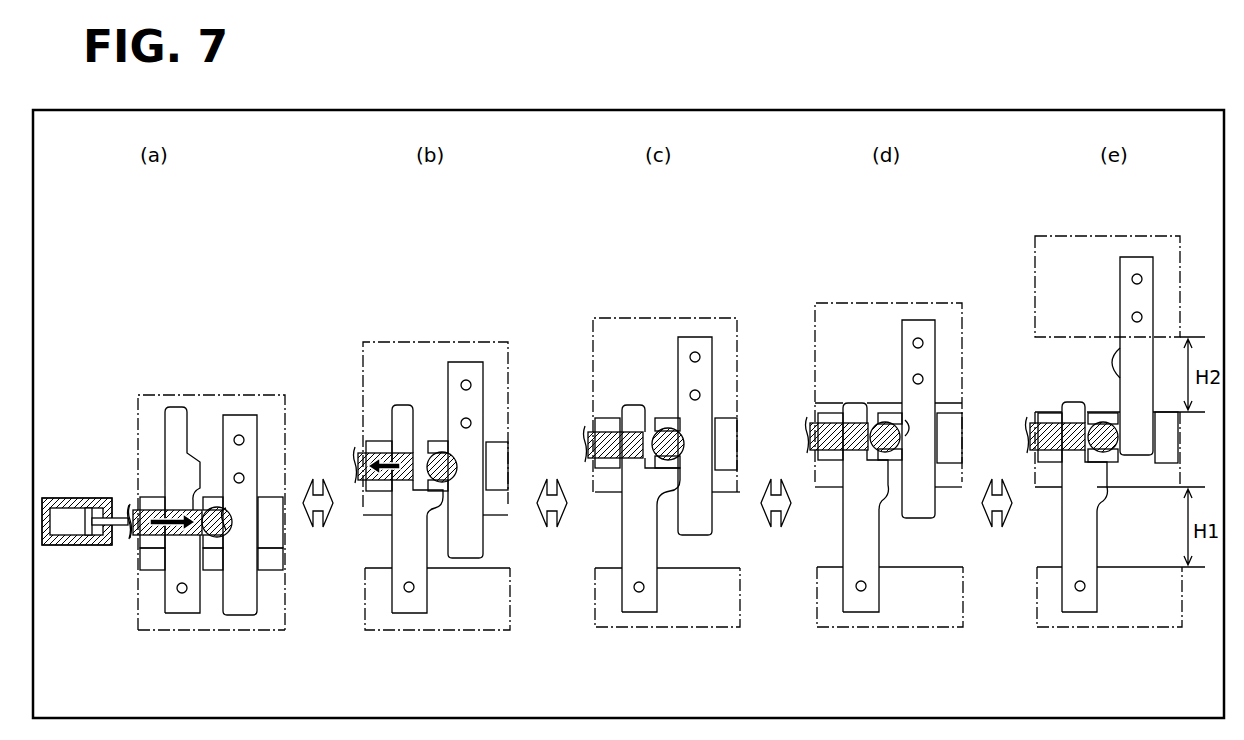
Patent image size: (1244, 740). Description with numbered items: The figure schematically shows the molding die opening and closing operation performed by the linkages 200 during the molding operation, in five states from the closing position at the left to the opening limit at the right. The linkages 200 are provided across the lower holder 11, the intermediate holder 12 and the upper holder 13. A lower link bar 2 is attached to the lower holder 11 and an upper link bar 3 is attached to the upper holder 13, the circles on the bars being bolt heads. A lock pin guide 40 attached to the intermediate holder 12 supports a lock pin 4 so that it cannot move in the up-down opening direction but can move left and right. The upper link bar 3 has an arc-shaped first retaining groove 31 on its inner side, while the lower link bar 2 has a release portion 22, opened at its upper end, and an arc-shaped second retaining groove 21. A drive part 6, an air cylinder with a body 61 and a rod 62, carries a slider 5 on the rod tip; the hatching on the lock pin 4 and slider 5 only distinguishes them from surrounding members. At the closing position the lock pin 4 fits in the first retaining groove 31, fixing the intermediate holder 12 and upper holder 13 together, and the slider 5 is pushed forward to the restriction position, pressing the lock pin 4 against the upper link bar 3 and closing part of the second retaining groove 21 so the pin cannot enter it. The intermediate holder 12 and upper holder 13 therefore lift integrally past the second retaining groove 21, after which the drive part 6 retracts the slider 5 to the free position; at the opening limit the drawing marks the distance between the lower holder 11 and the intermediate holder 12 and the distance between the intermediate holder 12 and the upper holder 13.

The lower link bar 2 is at (636, 544).
The upper link bar 3 is at (710, 421).
The lock pin 4 is at (672, 546).
The slider 5 is at (599, 452).
The drive part 6 is at (77, 485).
The lower holder 11 is at (660, 627).
The intermediate holder 12 is at (584, 520).
The upper holder 13 is at (659, 411).
The second retaining groove 21 is at (666, 543).
The release portion 22 is at (658, 384).
The first retaining groove 31 is at (713, 429).
The lock pin guide 40 is at (733, 486).
The body 61 is at (77, 549).
The rod 62 is at (106, 543).
The linkages 200 is at (686, 235).